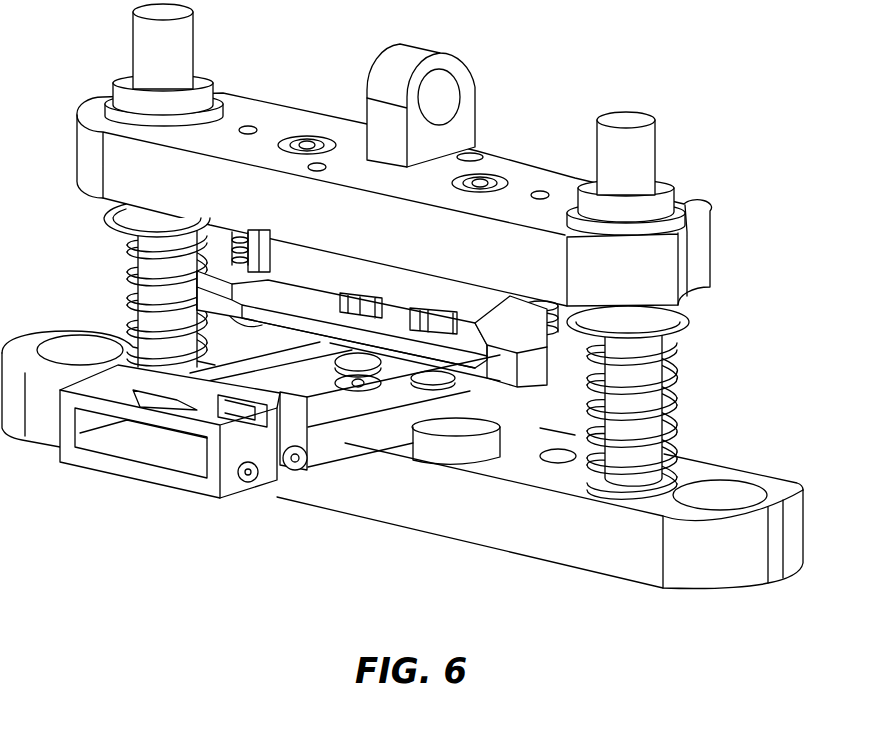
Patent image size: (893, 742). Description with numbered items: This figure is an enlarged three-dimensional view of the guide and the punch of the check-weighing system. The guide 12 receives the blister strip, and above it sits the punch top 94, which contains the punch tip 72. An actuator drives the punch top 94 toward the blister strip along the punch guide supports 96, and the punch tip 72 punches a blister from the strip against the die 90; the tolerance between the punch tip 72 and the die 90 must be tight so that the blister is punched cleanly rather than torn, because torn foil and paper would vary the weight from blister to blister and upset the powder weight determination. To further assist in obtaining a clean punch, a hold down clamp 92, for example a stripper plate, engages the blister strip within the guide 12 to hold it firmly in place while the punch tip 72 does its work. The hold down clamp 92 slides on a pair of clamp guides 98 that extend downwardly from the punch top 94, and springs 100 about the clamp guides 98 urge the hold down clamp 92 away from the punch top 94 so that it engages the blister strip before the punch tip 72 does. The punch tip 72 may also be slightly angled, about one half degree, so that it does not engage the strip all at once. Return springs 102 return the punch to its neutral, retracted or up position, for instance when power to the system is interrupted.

The guide 12 is at (333, 443).
The punch tip 72 is at (412, 365).
The die 90 is at (392, 362).
The hold down clamp 92 is at (500, 371).
The punch top 94 is at (660, 268).
The punch guide supports 96 is at (640, 393).
The clamp guides 98 is at (538, 310).
The springs 100 is at (572, 310).
The return springs 102 is at (401, 364).